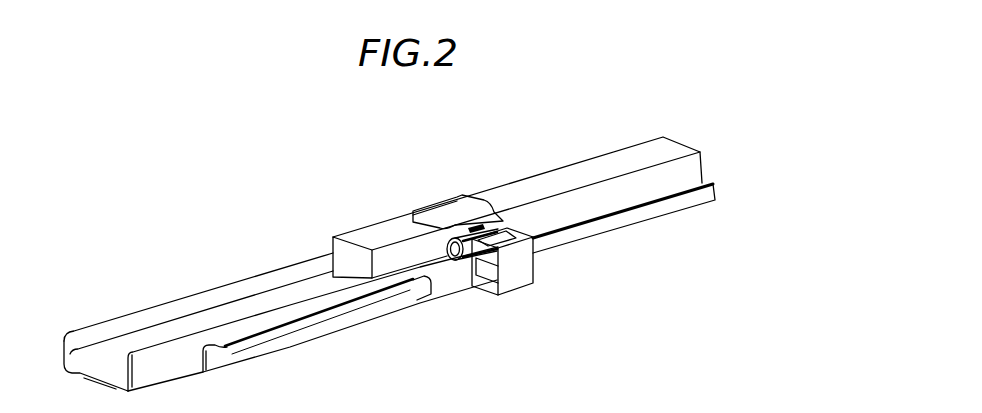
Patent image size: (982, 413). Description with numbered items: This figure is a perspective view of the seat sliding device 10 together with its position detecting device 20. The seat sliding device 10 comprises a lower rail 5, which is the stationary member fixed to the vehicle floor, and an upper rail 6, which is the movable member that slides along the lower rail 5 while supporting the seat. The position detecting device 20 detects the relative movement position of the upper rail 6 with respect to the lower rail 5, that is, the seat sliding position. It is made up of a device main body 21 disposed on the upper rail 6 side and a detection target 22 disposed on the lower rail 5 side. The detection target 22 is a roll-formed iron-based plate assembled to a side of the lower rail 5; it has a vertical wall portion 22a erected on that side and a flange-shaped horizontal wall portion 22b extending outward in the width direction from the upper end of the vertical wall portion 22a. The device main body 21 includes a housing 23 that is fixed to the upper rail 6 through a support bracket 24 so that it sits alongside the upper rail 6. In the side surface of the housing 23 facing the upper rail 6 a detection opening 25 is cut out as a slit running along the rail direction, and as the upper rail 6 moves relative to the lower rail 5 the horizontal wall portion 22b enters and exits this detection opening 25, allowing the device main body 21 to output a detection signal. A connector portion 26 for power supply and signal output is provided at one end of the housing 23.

The seat sliding device 10 is at (213, 167).
The position detecting device 20 is at (511, 342).
The lower rail 5 is at (122, 314).
The upper rail 6 is at (620, 152).
The device main body 21 is at (545, 279).
The housing 23 is at (502, 261).
The detection target 22 is at (250, 313).
The vertical wall portion 22a is at (265, 337).
The horizontal wall portion 22b is at (297, 316).
The support bracket 24 is at (452, 207).
The detection opening 25 is at (470, 268).
The connector portion 26 is at (447, 249).